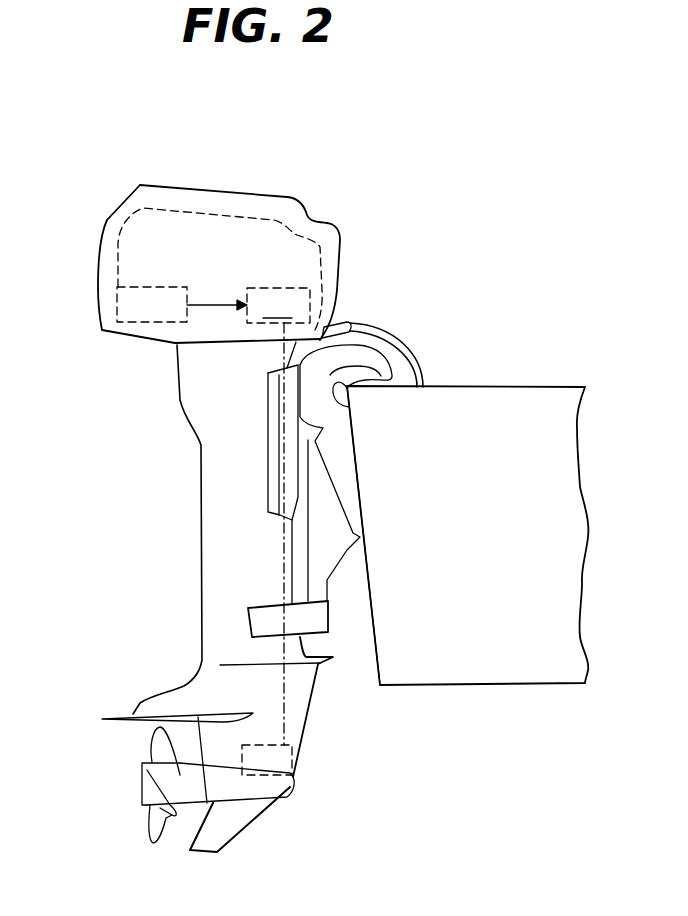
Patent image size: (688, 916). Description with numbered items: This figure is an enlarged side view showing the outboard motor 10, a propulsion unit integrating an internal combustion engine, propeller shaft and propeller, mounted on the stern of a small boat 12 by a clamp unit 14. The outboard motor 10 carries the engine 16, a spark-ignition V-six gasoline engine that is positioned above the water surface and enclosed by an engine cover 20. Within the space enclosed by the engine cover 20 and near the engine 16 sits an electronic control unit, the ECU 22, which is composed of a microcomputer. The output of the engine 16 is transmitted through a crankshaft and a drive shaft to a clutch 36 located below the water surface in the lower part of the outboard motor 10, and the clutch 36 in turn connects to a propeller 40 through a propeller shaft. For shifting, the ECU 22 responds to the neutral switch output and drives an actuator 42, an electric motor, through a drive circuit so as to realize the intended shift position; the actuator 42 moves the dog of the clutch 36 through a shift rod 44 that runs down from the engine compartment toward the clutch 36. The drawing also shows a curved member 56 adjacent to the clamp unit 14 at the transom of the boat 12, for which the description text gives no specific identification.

The outboard motor 10 is at (386, 309).
The boat 12 is at (477, 560).
The clamp unit 14 is at (357, 464).
The engine 16 is at (320, 243).
The engine cover 20 is at (268, 195).
The electronic control unit (ECU) 22 is at (153, 287).
The clutch 36 is at (250, 747).
The propeller 40 is at (152, 832).
The actuator 42 is at (278, 305).
The shift rod 44 is at (273, 463).
The steering arm 56 is at (417, 365).